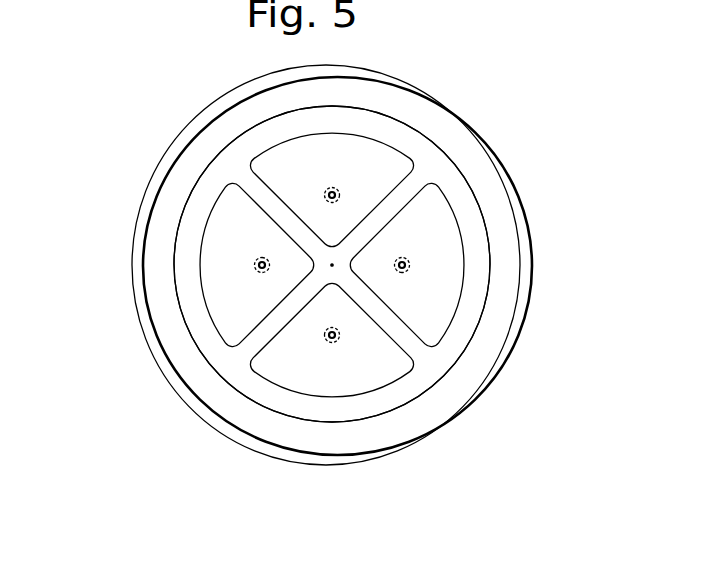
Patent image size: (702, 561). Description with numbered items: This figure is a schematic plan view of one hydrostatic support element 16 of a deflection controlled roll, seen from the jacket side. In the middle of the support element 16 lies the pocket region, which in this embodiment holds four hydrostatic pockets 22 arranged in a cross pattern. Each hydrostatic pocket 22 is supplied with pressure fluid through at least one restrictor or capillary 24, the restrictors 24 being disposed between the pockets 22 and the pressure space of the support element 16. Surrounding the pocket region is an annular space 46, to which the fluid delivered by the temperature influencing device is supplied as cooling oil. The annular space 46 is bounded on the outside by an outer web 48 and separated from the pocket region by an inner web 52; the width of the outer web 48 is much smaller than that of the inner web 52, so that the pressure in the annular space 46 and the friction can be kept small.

The support element 16 is at (126, 319).
The hydrostatic pocket 22 is at (274, 171).
The restrictor 24 is at (257, 268).
The annular space 46 is at (503, 298).
The outer web 48 is at (507, 347).
The inner web 52 is at (474, 242).